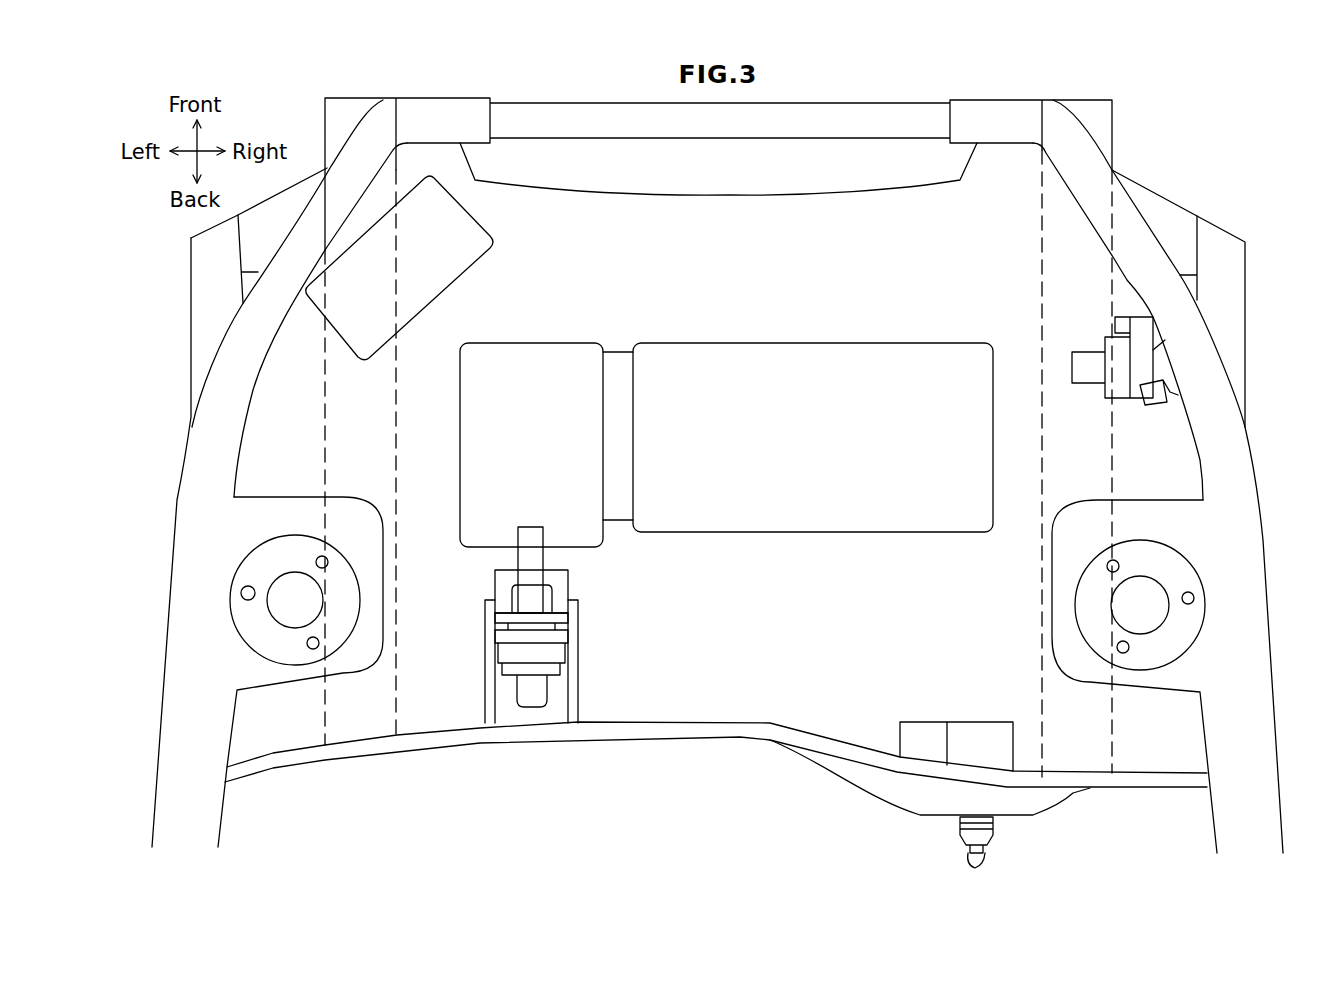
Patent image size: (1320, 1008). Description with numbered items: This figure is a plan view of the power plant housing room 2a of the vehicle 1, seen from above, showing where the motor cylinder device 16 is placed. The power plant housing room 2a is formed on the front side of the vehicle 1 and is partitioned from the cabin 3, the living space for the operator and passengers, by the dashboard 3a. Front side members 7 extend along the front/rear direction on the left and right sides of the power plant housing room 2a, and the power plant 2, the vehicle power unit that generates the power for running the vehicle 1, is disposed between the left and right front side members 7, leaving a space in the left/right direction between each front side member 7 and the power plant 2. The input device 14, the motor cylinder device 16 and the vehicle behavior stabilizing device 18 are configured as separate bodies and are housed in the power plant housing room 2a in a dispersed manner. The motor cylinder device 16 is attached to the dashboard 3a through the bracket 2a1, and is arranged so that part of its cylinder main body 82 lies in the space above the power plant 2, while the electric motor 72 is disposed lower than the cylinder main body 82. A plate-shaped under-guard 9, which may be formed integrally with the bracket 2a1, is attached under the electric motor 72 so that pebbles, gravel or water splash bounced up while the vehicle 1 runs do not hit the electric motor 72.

The vehicle 1 is at (1204, 143).
The front side members 7 is at (335, 112).
The power plant 2 is at (746, 451).
The power plant housing room 2a is at (757, 291).
The bracket 2a1 is at (578, 643).
The cabin 3 is at (546, 806).
The dashboard 3a is at (770, 722).
The under-guard 9 is at (497, 580).
The input device 14 is at (923, 747).
The motor cylinder device 16 is at (646, 572).
The vehicle behavior stabilizing device 18 is at (1142, 330).
The electric motor 72 is at (553, 595).
The cylinder main body 82 is at (537, 563).